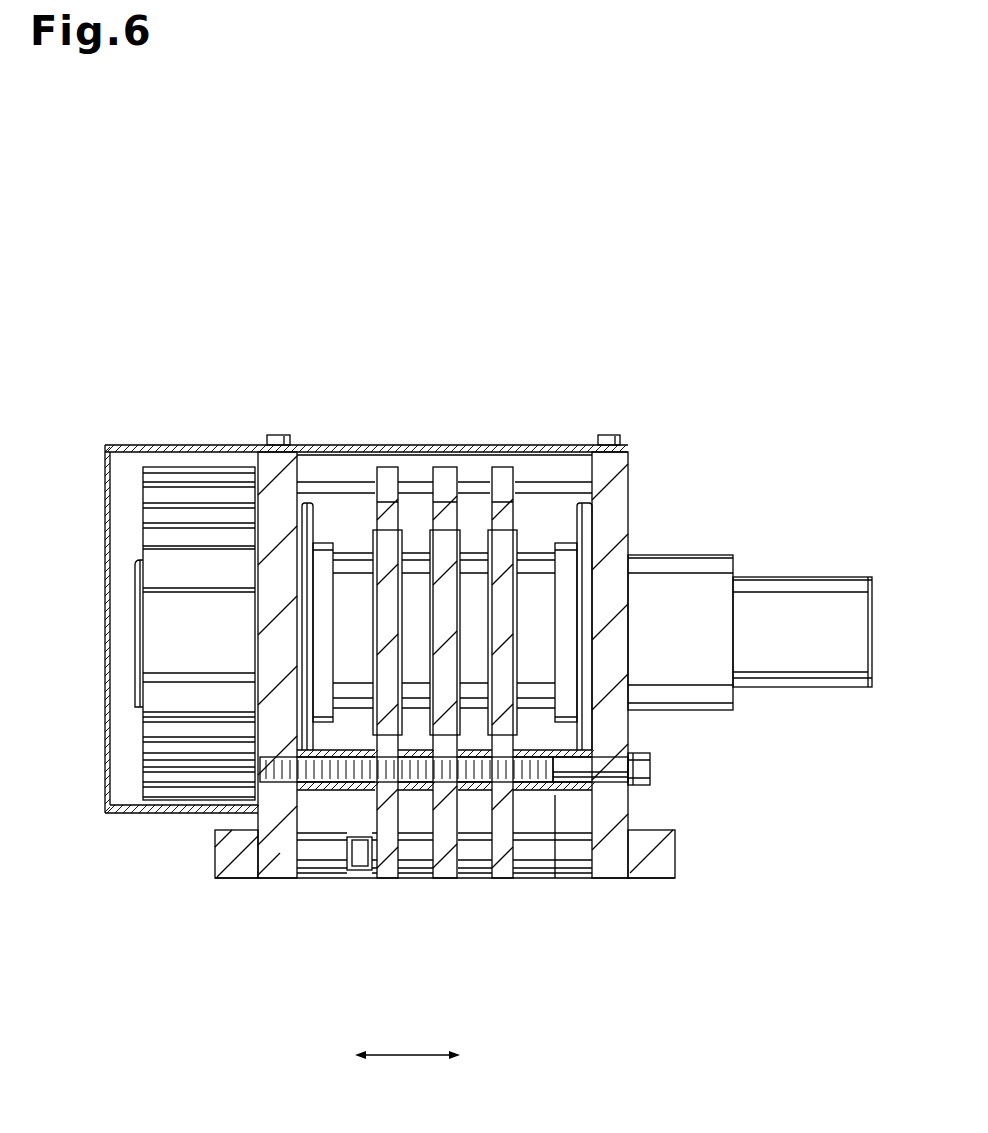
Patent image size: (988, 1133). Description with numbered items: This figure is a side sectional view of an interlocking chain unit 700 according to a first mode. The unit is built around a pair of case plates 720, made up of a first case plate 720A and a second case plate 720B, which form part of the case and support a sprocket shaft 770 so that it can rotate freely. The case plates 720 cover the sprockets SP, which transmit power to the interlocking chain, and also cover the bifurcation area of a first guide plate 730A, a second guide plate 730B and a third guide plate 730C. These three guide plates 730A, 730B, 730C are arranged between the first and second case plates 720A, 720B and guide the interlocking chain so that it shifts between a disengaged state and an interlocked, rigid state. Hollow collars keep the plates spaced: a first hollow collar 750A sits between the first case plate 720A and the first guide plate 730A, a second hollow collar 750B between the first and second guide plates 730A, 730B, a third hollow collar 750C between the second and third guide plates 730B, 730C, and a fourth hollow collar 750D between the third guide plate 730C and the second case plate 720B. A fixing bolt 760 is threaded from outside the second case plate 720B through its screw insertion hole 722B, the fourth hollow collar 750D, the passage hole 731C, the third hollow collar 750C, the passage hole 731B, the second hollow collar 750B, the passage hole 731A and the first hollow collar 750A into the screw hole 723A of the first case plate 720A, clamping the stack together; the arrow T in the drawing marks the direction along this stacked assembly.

The interlocking chain unit 700 is at (203, 299).
The pair of case plates 720 is at (496, 633).
The first case plate 720A is at (285, 537).
The second case plate 720B is at (613, 513).
The sprockets SP is at (459, 540).
The sprocket shaft 770 is at (532, 583).
The first hollow collar 750A is at (305, 738).
The second hollow collar 750B is at (417, 750).
The third hollow collar 750C is at (468, 750).
The fourth hollow collar 750D is at (563, 752).
The fixing bolt 760 is at (645, 767).
The screw hole 723A is at (313, 790).
The passage hole 731A is at (415, 797).
The passage hole 731B is at (472, 797).
The passage hole 731C is at (532, 797).
The screw insertion hole 722B is at (574, 790).
The first guide plate 730A is at (383, 857).
The second guide plate 730B is at (438, 857).
The third guide plate 730C is at (503, 857).
The thickness direction T is at (407, 1068).